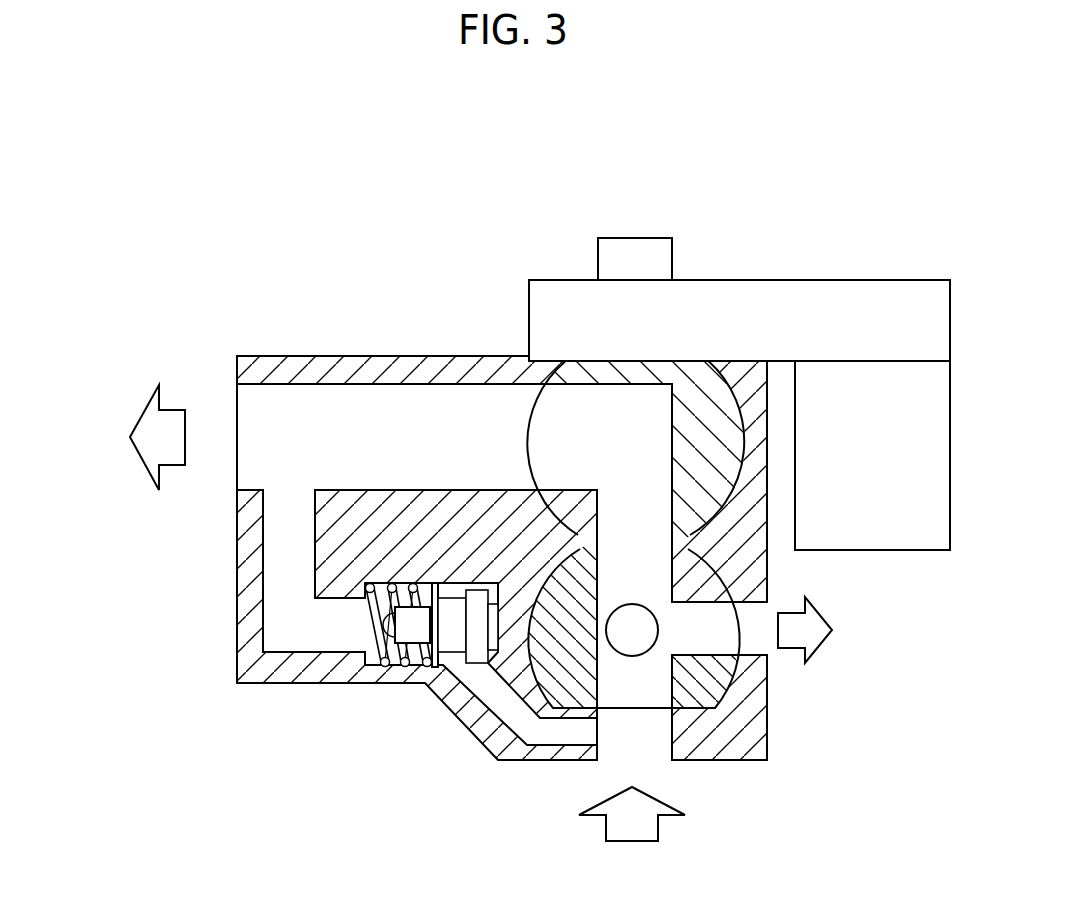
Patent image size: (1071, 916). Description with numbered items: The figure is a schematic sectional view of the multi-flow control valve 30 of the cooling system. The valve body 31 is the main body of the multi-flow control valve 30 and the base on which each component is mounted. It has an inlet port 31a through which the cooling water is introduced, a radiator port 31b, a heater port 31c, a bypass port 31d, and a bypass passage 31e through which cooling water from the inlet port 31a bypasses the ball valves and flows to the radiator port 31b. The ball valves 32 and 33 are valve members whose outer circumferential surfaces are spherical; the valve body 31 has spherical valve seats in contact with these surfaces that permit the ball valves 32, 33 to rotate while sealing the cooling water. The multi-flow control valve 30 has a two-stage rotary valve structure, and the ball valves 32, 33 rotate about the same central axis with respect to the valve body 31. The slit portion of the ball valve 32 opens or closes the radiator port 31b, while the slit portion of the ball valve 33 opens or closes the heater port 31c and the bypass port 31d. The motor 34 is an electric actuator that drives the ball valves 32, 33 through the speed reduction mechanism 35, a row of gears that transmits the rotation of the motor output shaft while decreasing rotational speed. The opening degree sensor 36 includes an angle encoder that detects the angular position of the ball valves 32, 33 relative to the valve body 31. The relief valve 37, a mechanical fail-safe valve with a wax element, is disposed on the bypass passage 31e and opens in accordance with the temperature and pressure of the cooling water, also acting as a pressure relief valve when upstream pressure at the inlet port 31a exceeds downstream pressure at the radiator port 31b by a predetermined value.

The multi-flow control valve 30 is at (200, 270).
The valve body 31 is at (300, 356).
The inlet port 31a is at (655, 748).
The radiator port 31b is at (262, 423).
The heater port 31c is at (762, 637).
The bypass port 31d is at (640, 628).
The bypass passage 31e is at (288, 623).
The ball valve 32 is at (700, 380).
The ball valve 33 is at (593, 687).
The motor 34 is at (865, 393).
The speed reduction mechanism 35 is at (545, 280).
The opening degree sensor 36 is at (597, 240).
The relief valve 37 is at (405, 663).